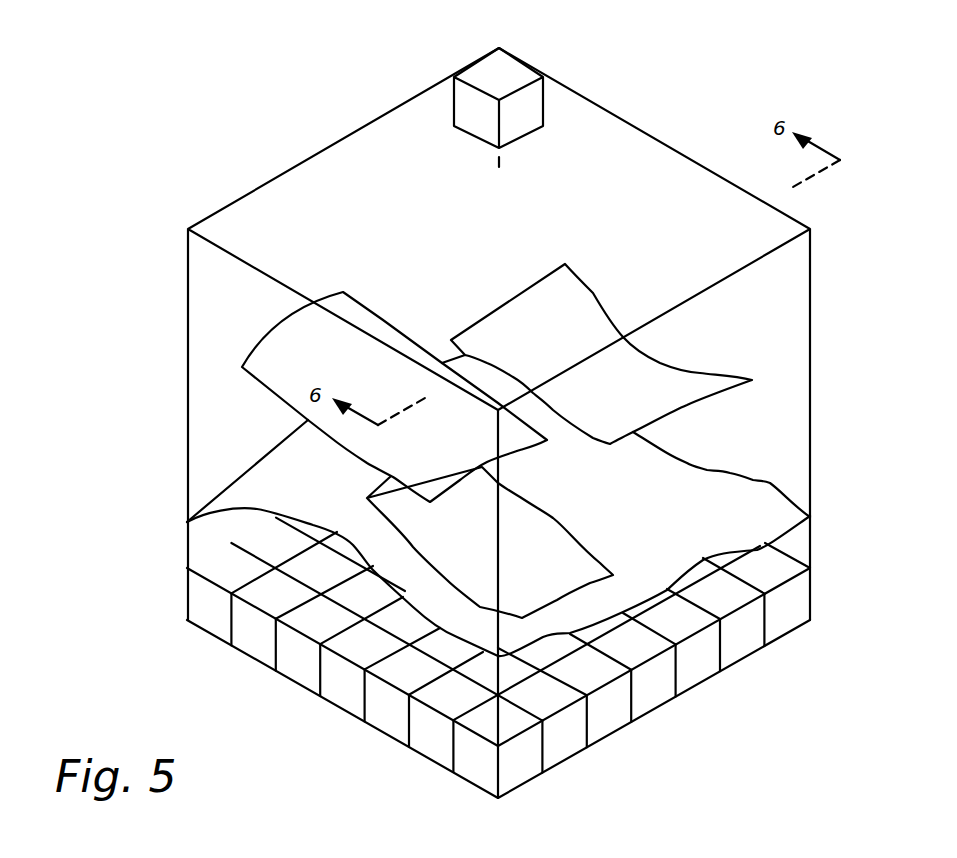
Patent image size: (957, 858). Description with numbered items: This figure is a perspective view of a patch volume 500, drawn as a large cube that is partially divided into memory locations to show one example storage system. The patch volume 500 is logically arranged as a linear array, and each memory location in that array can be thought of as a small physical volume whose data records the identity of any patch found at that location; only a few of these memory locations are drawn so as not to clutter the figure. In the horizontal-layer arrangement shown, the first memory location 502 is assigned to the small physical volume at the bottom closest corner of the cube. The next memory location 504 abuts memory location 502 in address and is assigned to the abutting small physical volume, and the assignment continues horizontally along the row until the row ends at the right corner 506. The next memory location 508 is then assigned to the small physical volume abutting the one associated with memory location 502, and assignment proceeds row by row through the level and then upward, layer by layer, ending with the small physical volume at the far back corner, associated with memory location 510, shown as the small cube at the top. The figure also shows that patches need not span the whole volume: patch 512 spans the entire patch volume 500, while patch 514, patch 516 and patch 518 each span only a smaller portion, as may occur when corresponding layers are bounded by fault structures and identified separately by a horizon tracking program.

The patch volume 500 is at (218, 106).
The first memory location 502 is at (522, 770).
The next memory location 504 is at (567, 745).
The right corner 506 is at (790, 612).
The next memory location 508 is at (430, 745).
The memory location 510 is at (512, 65).
The patch 512 is at (748, 502).
The patch 514 is at (547, 298).
The patch 516 is at (287, 338).
The patch 518 is at (540, 530).